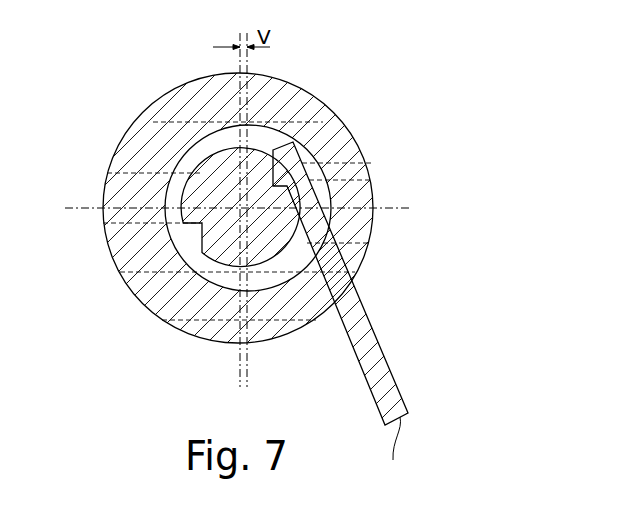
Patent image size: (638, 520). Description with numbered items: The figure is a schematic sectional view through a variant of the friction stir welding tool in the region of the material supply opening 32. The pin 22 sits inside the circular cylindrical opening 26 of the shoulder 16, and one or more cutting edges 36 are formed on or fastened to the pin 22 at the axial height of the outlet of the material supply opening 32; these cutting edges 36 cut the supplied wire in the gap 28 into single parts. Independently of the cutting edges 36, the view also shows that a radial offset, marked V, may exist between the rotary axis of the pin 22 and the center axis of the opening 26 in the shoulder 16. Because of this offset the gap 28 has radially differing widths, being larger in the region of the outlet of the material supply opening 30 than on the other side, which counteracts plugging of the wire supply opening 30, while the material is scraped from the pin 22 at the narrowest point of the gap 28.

The shoulder 16 is at (152, 297).
The pin 22 is at (205, 195).
The opening 26 is at (267, 275).
The gap 28 is at (373, 180).
The material supply opening 30 is at (370, 243).
The material supply opening 32 is at (400, 380).
The cutting edges 36 is at (367, 163).